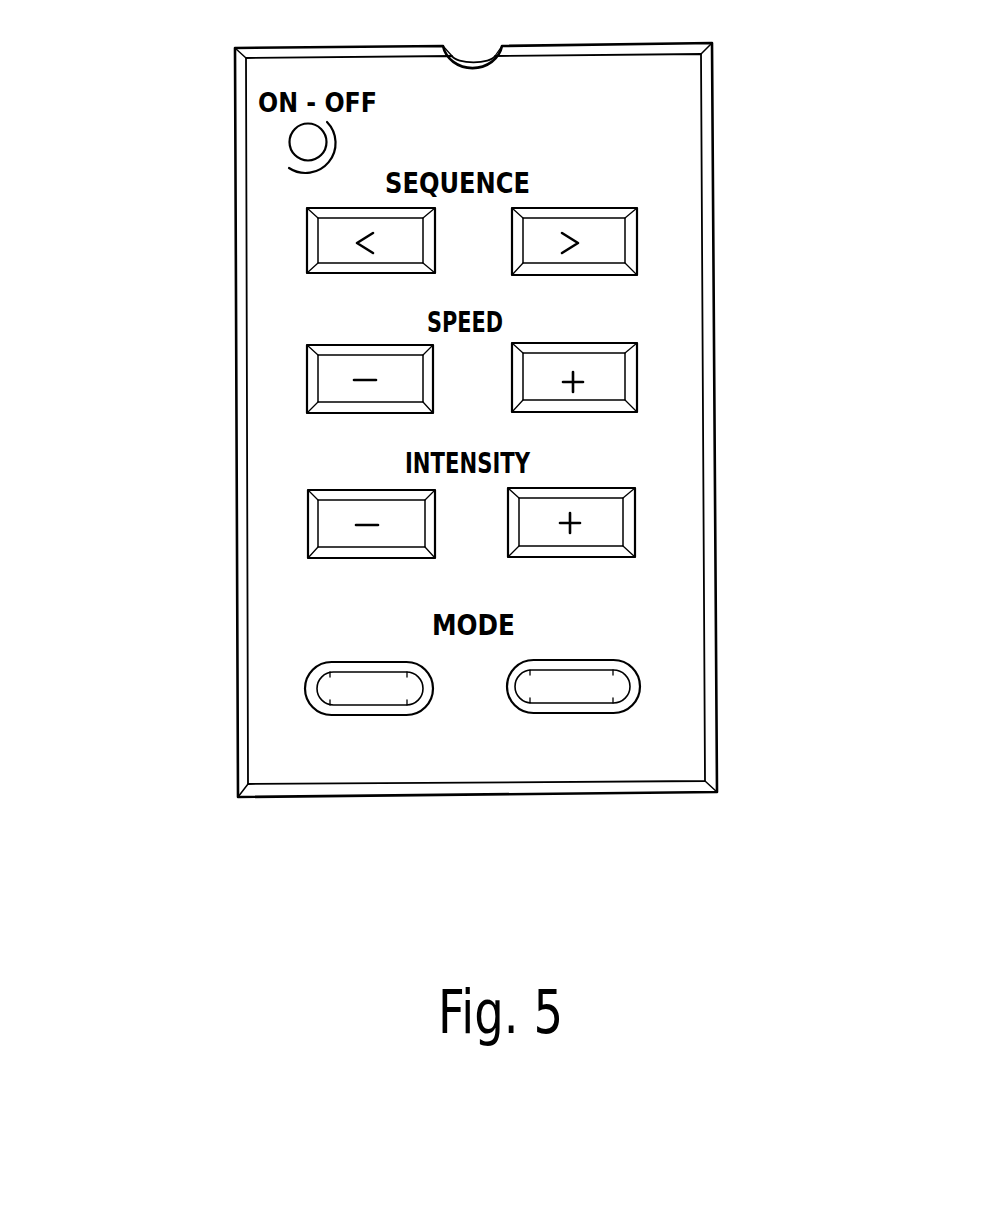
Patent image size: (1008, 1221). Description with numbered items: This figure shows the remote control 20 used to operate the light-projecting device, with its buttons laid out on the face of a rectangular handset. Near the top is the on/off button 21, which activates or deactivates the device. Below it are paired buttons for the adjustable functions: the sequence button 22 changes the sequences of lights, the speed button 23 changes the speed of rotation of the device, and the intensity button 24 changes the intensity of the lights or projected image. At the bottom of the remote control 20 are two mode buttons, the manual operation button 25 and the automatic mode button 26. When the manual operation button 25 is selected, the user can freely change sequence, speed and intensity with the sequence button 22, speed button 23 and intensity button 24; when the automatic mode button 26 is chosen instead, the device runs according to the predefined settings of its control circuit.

The remote control 20 is at (546, 408).
The on/off button 21 is at (189, 106).
The sequence button 22 is at (682, 195).
The speed button 23 is at (240, 345).
The intensity button 24 is at (678, 490).
The manual operation button 25 is at (246, 652).
The automatic mode button 26 is at (687, 648).